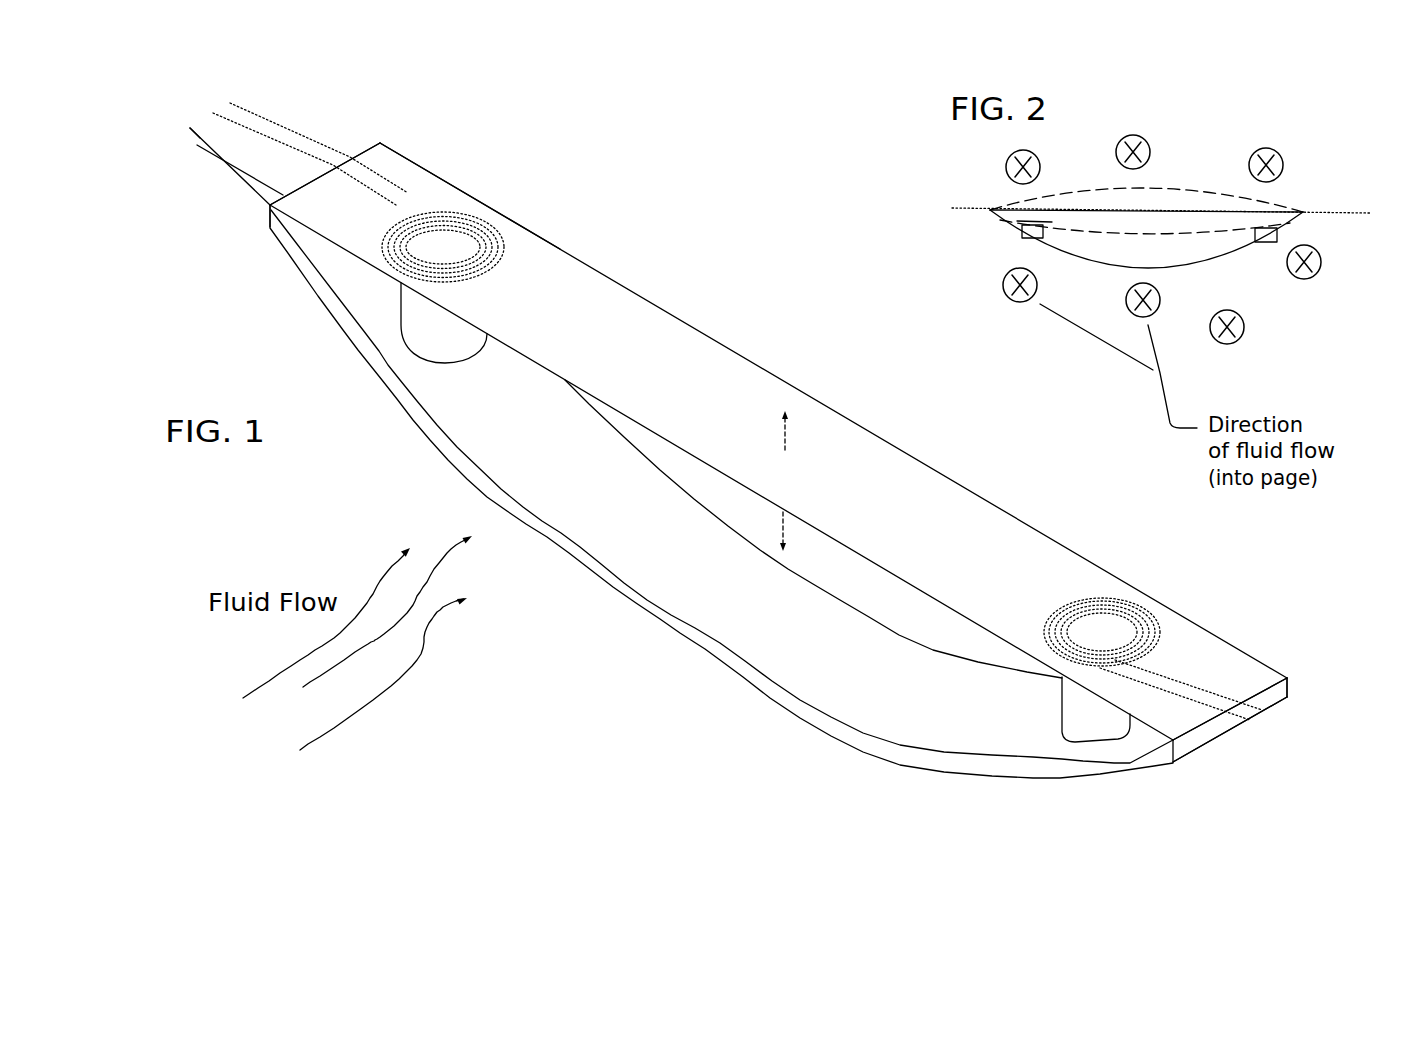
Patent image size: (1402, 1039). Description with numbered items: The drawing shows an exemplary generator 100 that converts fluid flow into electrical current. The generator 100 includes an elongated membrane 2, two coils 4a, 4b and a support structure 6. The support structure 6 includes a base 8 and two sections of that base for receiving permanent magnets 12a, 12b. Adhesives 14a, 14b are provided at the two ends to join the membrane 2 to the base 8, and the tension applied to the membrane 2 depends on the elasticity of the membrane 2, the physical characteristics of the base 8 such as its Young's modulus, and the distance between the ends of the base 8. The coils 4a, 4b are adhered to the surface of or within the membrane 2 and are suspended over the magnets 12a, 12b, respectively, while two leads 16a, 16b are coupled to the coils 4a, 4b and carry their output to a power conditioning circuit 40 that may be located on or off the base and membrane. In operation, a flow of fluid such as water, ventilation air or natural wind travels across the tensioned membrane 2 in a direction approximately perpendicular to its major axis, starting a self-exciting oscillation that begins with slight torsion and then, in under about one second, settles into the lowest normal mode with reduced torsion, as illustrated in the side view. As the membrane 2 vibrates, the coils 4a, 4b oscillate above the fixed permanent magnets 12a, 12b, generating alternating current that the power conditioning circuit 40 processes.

The generator 100 is at (667, 260).
The elongated membrane 2 is at (620, 310).
The coil 4a is at (493, 233).
The coil 4b is at (1163, 636).
The support structure 6 is at (280, 282).
The base 8 is at (745, 630).
The permanent magnet 12a is at (423, 352).
The permanent magnet 12b is at (1093, 723).
The adhesive 14a is at (397, 160).
The adhesive 14b is at (1243, 687).
The lead 16a is at (333, 144).
The lead 16b is at (245, 202).
The power conditioning circuit 40 is at (210, 102).